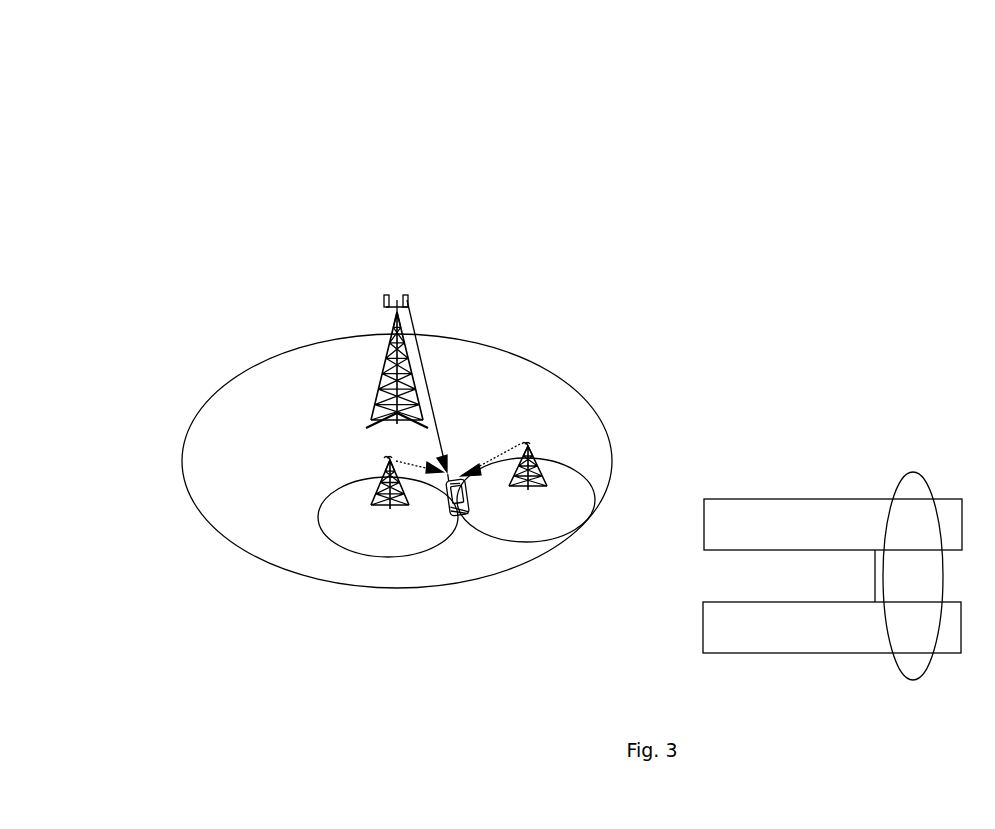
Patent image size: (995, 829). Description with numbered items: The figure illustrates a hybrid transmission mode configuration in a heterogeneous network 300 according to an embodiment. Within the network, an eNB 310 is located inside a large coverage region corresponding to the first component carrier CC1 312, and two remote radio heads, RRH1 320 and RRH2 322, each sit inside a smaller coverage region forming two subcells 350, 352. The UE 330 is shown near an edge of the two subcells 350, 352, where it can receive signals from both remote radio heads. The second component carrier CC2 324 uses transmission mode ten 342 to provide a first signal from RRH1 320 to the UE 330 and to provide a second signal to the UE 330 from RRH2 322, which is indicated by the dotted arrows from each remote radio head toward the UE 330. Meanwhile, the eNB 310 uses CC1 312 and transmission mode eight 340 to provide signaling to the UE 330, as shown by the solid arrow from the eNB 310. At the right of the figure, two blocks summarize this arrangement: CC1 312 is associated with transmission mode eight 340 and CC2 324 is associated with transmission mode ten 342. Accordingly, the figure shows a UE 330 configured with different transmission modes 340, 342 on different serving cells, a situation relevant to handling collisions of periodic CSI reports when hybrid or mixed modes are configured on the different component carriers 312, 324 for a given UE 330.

The heterogeneous network 300 is at (105, 88).
The eNB 310 is at (427, 302).
The CC1 312 is at (470, 372).
The RRH1 320 is at (362, 455).
The RRH2 322 is at (563, 428).
The CC2 324 is at (423, 442).
The UE 330 is at (458, 517).
The TM 8 340 is at (847, 498).
The TM 10 342 is at (840, 655).
The subcell 350 is at (397, 557).
The subcell 352 is at (592, 490).